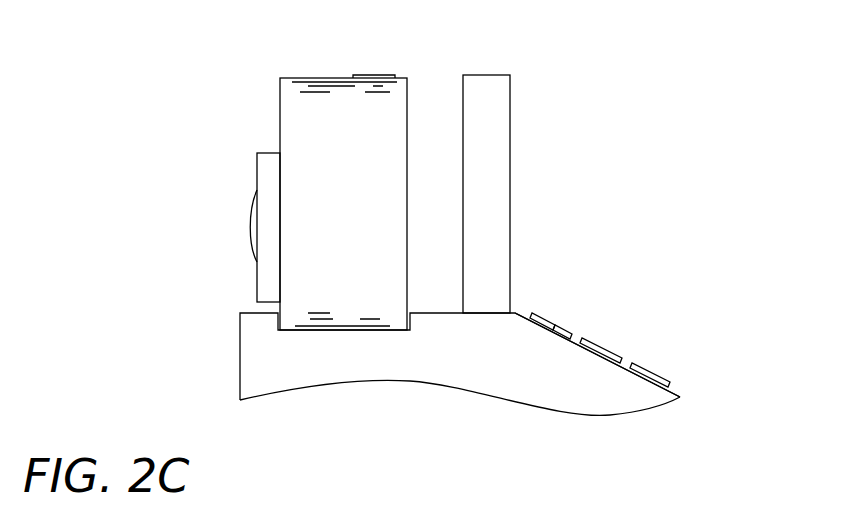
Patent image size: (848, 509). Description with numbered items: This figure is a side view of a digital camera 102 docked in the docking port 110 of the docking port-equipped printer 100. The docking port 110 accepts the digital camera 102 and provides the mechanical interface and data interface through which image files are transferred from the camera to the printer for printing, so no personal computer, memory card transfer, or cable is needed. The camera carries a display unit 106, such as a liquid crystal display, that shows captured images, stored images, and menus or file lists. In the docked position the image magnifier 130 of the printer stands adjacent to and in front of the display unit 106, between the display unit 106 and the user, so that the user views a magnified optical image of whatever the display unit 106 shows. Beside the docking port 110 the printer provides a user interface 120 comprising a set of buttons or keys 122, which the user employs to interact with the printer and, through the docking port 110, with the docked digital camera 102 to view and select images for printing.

The docking port-equipped printer 100 is at (622, 96).
The digital camera 102 is at (280, 123).
The display unit 106 is at (407, 193).
The docking port 110 is at (294, 342).
The user interface 120 is at (611, 314).
The keys 122 is at (650, 368).
The image magnifier 130 is at (502, 182).